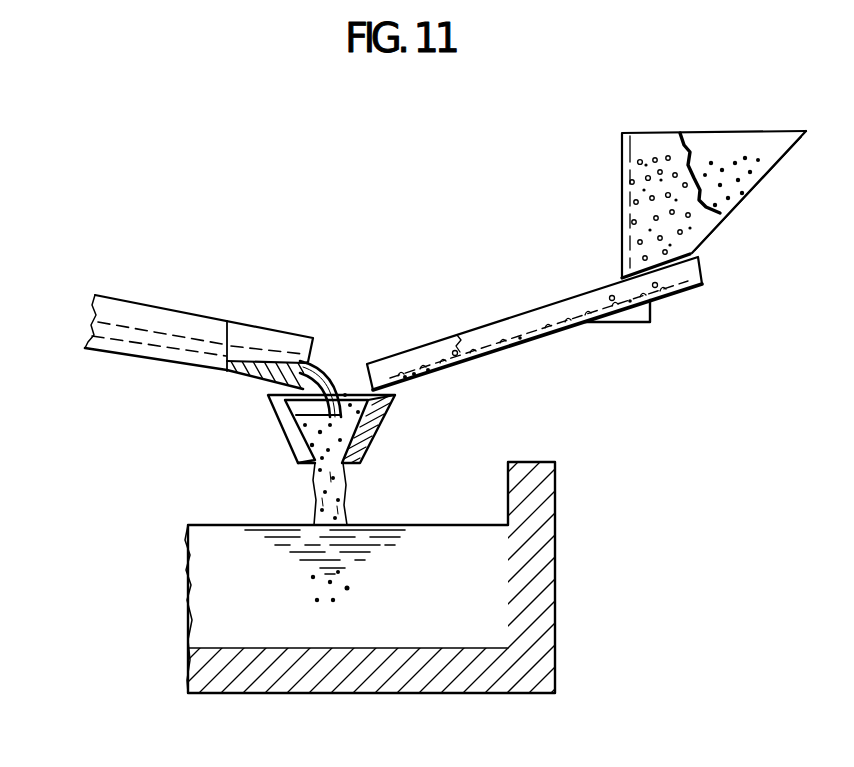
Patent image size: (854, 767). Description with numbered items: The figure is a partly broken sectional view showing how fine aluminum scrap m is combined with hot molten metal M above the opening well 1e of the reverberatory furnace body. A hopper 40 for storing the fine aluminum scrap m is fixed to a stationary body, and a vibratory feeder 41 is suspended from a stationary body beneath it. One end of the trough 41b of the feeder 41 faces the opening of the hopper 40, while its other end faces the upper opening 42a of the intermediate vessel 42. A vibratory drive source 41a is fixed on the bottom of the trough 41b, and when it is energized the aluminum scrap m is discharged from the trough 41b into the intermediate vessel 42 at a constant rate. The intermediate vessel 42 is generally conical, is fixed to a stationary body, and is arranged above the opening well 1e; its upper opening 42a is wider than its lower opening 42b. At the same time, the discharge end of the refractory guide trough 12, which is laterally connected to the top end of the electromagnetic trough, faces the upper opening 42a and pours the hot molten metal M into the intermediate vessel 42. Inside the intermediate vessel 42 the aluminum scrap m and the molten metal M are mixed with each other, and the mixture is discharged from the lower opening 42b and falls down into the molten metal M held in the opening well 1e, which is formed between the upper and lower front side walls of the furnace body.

The guide trough 12 is at (155, 318).
The molten metal M is at (318, 363).
The fine aluminum scrap m is at (398, 370).
The hopper 40 is at (645, 152).
The vibratory feeder 41 is at (537, 340).
The vibratory drive source 41a is at (622, 320).
The trough 41b is at (565, 305).
The intermediate vessel 42 is at (367, 440).
The upper opening 42a is at (383, 407).
The lower opening 42b is at (315, 467).
The opening well 1e is at (508, 497).